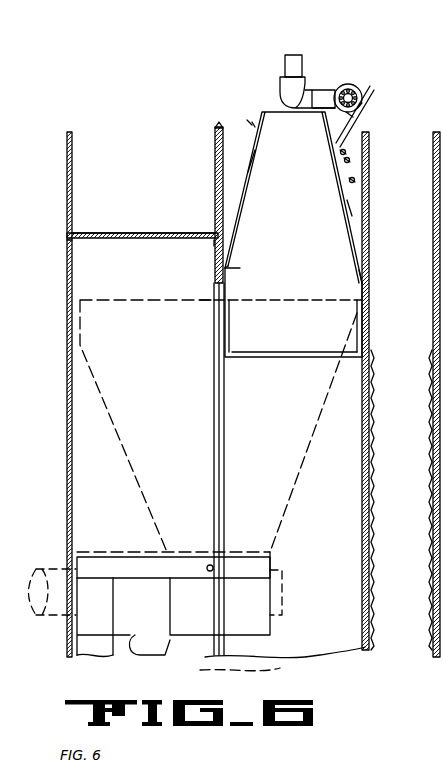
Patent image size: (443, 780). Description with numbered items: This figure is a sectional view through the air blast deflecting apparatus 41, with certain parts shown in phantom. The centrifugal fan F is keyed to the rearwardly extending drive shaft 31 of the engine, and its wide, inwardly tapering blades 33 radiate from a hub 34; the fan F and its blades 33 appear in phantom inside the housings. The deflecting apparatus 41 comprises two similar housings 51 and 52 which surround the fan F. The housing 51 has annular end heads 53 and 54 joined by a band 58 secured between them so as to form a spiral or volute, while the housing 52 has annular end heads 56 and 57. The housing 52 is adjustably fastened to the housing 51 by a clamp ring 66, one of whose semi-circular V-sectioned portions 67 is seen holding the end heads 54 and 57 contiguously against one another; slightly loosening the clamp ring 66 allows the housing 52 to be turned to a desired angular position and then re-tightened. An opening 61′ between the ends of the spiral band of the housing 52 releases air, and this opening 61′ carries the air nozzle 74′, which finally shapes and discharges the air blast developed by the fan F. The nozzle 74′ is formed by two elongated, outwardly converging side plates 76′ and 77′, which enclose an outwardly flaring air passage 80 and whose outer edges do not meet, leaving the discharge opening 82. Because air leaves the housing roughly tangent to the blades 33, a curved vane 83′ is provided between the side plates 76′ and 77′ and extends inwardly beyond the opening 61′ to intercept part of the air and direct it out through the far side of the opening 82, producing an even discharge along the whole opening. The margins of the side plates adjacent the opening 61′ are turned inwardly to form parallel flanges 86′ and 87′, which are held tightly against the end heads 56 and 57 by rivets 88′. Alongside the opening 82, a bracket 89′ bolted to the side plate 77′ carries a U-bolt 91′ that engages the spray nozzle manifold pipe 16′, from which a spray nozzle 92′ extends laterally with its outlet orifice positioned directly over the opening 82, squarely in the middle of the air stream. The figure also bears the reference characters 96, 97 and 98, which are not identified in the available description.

The air blast deflecting apparatus 41 is at (128, 105).
The spray nozzle 92′ is at (297, 56).
The opening 82 is at (280, 118).
The U-bolt 91′ is at (343, 85).
The air nozzle 74′ is at (253, 122).
The housing 52 is at (250, 120).
The spray nozzle manifold pipe 16′ is at (362, 86).
The bracket 89′ is at (376, 90).
The clamp ring 66 is at (214, 126).
The semi-circular V-sectioned portion 67 is at (214, 153).
The side plate 76′ is at (250, 170).
The curved vane 83′ is at (283, 201).
The housing 51 is at (99, 232).
The band 58 is at (181, 233).
The side plate 77′ is at (352, 216).
The annular end head 56 is at (437, 242).
The annular end head 53 is at (70, 257).
The annular end head 54 is at (214, 252).
The annular end head 57 is at (229, 275).
The fan blade 33 is at (178, 300).
The air passage 80 is at (290, 232).
The flange 86′ is at (228, 310).
The flange 87′ is at (356, 304).
The rivet 88′ is at (355, 318).
The opening 61′ is at (285, 362).
The left outer wall 96 is at (68, 455).
The wavy liner 97 is at (372, 464).
The outer right wall 98 is at (435, 512).
The drive shaft 31 is at (55, 590).
The centrifugal fan F is at (272, 457).
The hub 34 is at (272, 625).